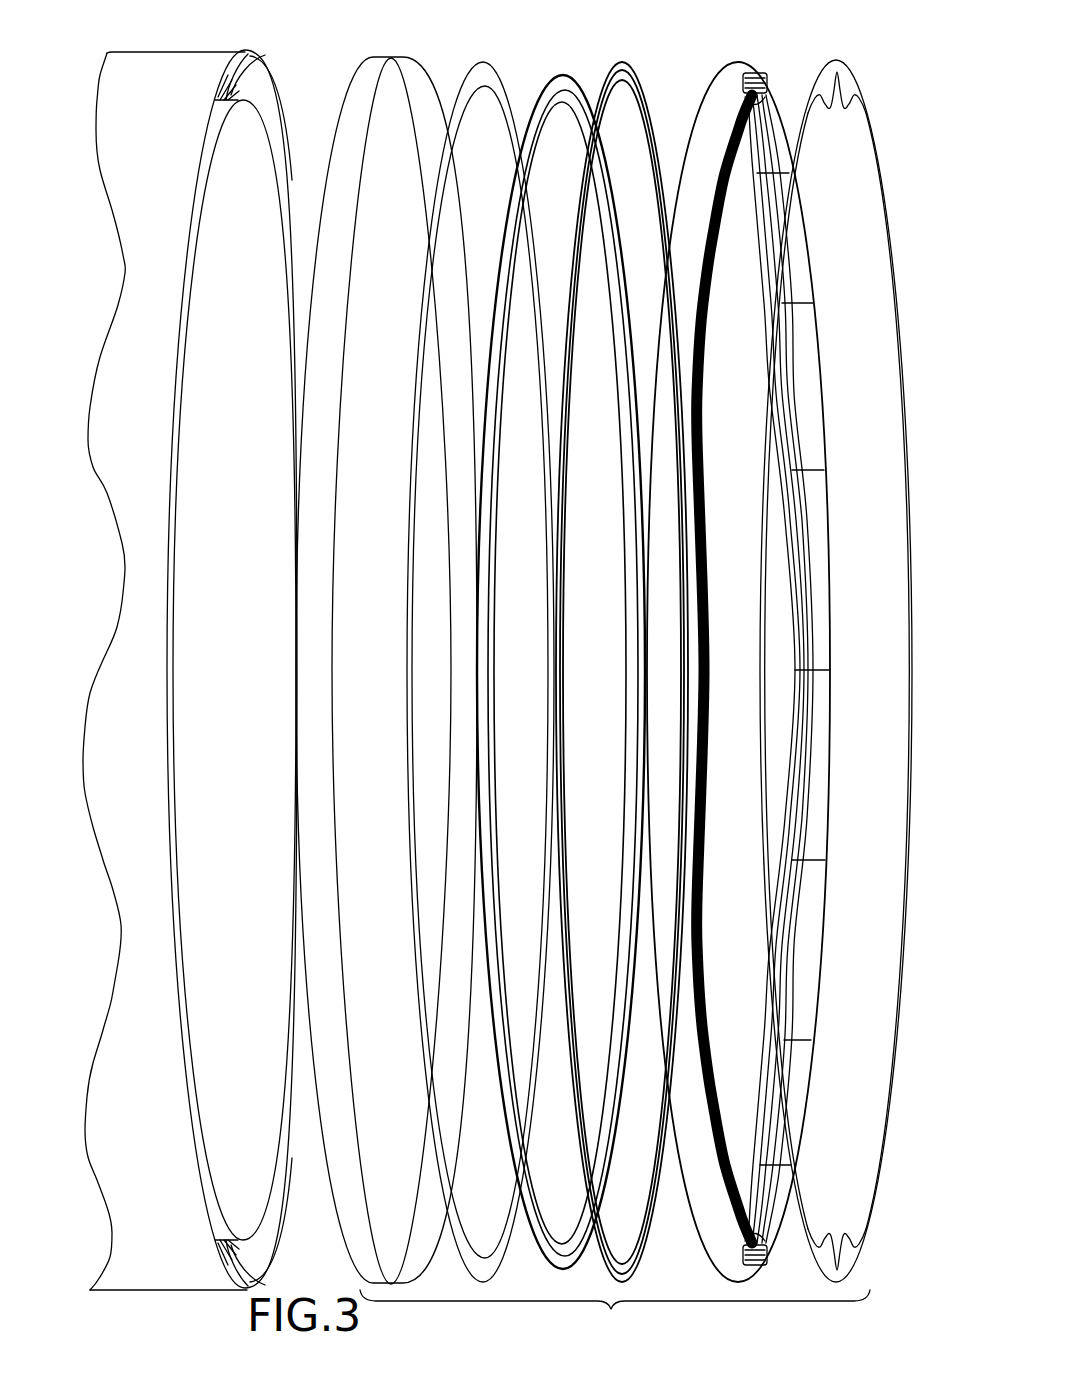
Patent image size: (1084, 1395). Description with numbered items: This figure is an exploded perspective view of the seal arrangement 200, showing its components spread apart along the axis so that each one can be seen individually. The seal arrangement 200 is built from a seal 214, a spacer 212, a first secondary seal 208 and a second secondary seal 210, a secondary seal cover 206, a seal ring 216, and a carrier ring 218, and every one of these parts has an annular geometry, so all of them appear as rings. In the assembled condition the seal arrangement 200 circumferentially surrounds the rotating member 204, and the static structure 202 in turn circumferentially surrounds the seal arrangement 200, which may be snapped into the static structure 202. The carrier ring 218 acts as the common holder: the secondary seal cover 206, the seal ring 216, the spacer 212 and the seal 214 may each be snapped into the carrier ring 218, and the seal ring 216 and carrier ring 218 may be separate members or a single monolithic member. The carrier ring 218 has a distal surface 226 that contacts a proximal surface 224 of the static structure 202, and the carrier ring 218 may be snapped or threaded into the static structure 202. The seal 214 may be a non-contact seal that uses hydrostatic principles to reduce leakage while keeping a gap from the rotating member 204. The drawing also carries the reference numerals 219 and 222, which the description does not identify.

The seal arrangement 200 is at (615, 1316).
The static structure 202 is at (168, 80).
The rotating member 204 is at (250, 130).
The secondary seal cover 206 is at (497, 82).
The first secondary seal 208 is at (590, 92).
The second secondary seal 210 is at (553, 75).
The spacer 212 is at (655, 85).
The seal 214 is at (732, 63).
The seal ring 216 is at (860, 80).
The carrier ring 218 is at (358, 93).
The notch 219 is at (838, 88).
The tube wall 222 is at (243, 87).
The proximal surface 224 is at (258, 83).
The distal surface 226 is at (380, 60).